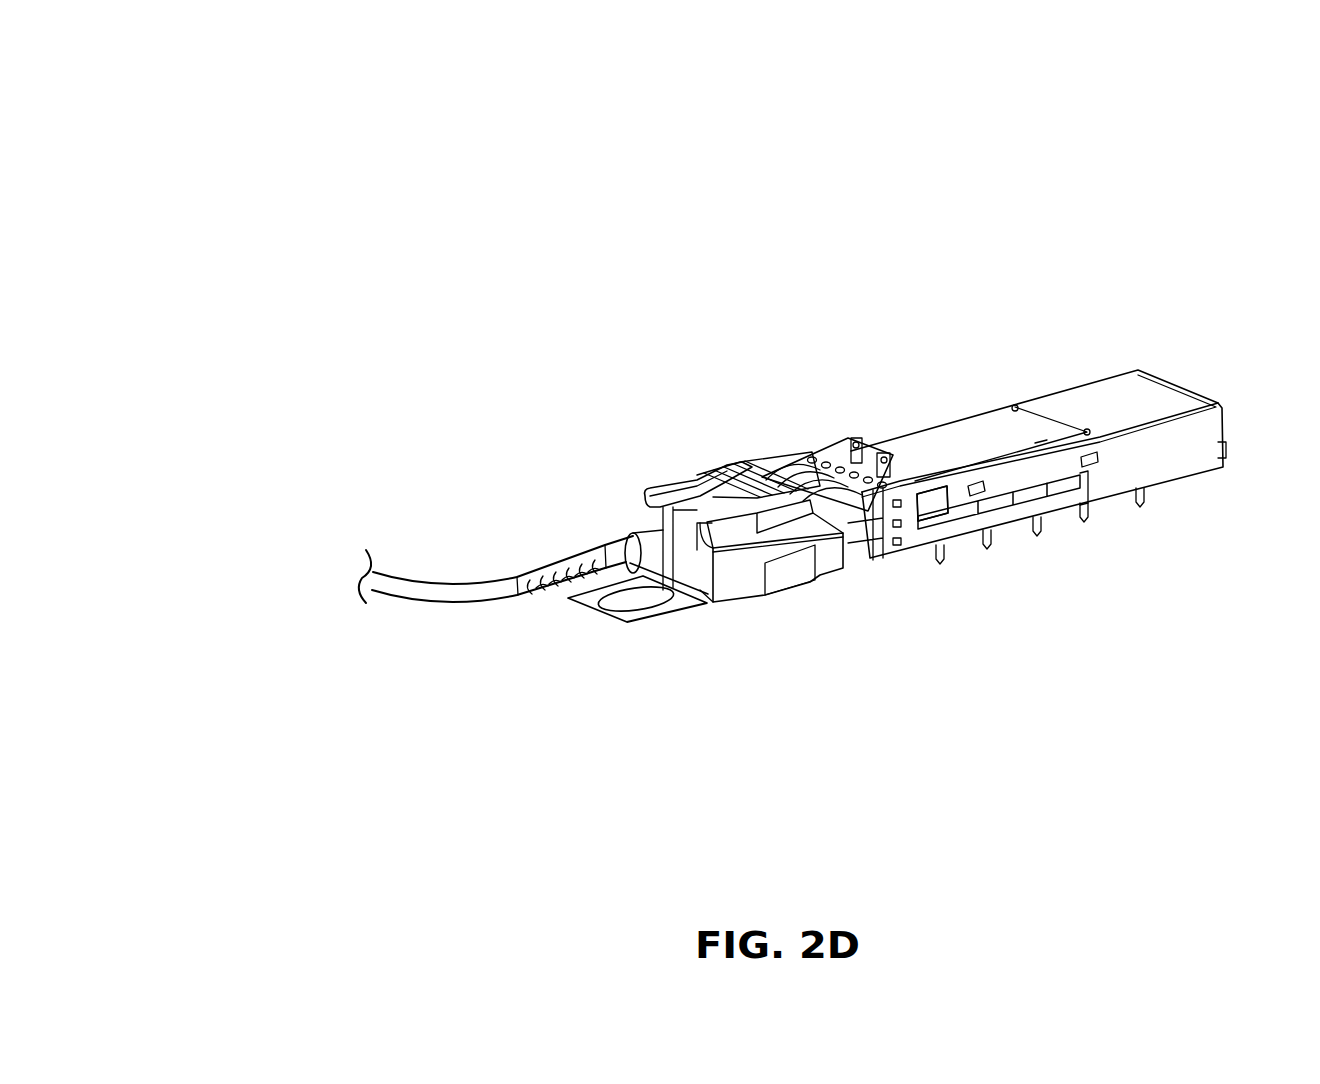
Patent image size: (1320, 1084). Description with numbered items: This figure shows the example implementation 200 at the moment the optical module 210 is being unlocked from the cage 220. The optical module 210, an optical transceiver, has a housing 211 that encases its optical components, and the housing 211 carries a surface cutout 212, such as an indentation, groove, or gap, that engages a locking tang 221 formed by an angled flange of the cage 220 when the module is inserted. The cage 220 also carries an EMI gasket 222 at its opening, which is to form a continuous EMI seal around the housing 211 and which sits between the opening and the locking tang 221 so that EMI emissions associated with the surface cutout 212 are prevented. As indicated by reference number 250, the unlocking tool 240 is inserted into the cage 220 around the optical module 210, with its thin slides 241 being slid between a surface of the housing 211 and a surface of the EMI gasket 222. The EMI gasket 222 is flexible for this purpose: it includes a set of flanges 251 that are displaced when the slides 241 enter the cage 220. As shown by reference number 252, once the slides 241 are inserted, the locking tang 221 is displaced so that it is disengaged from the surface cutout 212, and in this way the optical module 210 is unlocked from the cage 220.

The example implementation 200 is at (257, 65).
The optical module 210 is at (716, 540).
The housing 211 is at (835, 567).
The surface cutout 212 is at (929, 492).
The cage 220 is at (1043, 492).
The locking tang 221 is at (887, 442).
The EMI gasket 222 is at (788, 455).
The unlocking tool 240 is at (663, 620).
The slides 241 is at (745, 570).
The insertion of the unlocking tool 250 is at (580, 642).
The flanges 251 is at (865, 512).
The displacement of the locking tang 252 is at (940, 516).